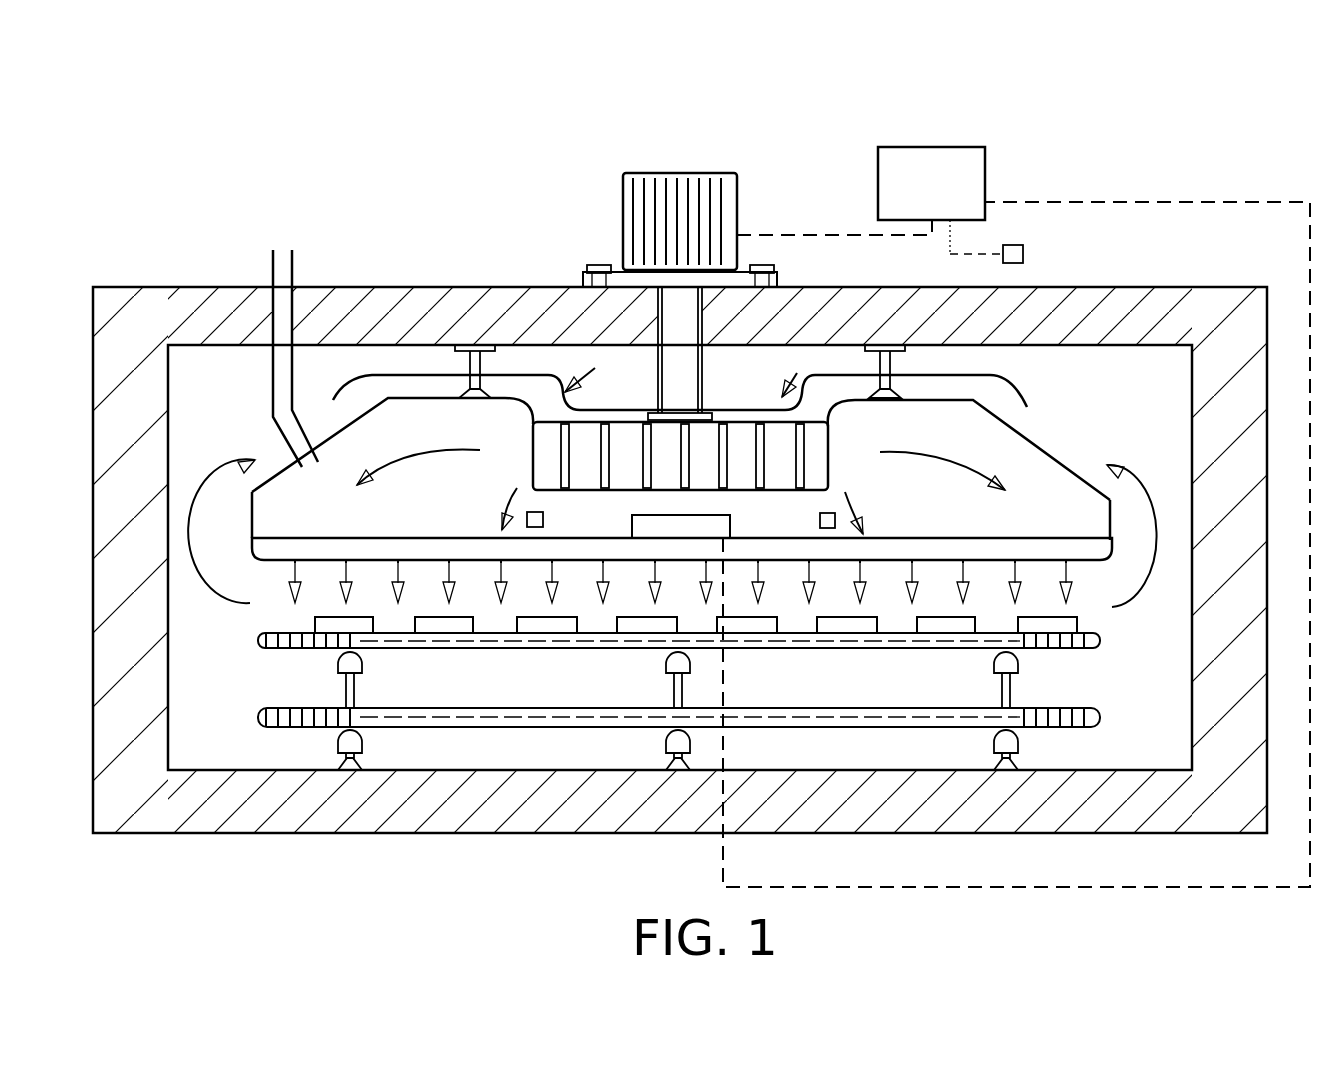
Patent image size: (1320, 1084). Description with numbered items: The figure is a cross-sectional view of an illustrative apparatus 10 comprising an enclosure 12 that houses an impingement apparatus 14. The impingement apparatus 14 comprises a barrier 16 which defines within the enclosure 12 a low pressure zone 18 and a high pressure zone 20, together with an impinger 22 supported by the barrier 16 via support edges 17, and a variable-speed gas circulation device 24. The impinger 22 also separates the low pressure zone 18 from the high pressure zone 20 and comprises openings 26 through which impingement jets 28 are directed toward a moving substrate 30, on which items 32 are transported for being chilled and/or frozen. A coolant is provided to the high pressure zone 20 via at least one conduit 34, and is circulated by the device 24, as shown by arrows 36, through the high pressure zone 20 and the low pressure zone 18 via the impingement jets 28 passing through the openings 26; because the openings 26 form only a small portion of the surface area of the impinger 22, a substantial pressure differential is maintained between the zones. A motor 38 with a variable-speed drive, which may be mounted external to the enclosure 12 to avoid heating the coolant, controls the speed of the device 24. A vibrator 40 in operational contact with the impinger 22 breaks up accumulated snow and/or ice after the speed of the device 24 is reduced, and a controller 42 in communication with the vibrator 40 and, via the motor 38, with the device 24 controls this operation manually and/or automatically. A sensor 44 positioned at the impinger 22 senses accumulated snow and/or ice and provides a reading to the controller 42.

The apparatus 10 is at (701, 461).
The enclosure 12 is at (1137, 282).
The impingement apparatus 14 is at (1057, 435).
The barrier 16 is at (1080, 467).
The support edges 17 is at (247, 565).
The low pressure zone 18 is at (203, 404).
The high pressure zone 20 is at (943, 436).
The impinger 22 is at (923, 540).
The variable-speed gas circulation device 24 is at (530, 425).
The openings 26 is at (293, 558).
The impingement jets 28 is at (295, 588).
The moving substrate 30 is at (288, 648).
The items 32 is at (448, 630).
The conduit 34 is at (297, 272).
The arrows 36 is at (593, 370).
The motor 38 is at (737, 183).
The vibrator 40 is at (722, 527).
The controller 42 is at (917, 197).
The sensor 44 is at (1025, 254).